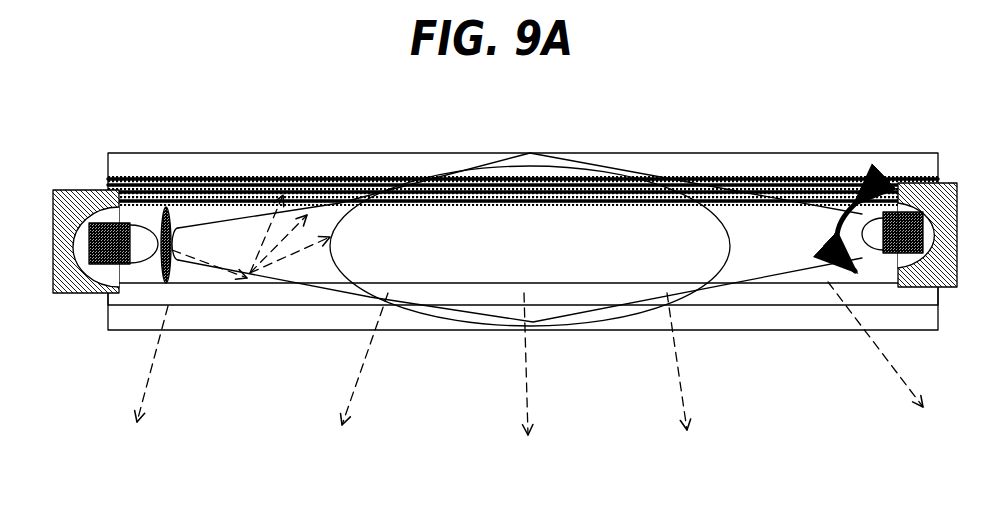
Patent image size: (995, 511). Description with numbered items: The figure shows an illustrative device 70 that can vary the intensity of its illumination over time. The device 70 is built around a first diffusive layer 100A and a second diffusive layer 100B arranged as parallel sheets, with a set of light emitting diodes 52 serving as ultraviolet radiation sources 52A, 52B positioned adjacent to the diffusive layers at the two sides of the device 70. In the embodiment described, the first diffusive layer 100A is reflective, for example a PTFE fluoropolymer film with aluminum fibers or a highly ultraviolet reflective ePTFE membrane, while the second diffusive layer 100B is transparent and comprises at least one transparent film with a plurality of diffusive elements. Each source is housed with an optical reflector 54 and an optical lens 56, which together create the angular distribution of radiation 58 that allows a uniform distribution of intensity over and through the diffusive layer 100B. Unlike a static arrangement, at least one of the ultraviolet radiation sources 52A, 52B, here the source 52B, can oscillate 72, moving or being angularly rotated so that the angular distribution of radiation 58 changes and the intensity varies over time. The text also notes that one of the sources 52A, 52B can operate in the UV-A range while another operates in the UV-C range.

The light emitting diode 52 is at (158, 247).
The first ultraviolet radiation source 52A is at (136, 253).
The second ultraviolet radiation source 52B is at (878, 222).
The optical reflector 54 is at (102, 198).
The optical lens 56 is at (172, 284).
The angular distribution of radiation 58 is at (772, 218).
The device 70 is at (250, 138).
The oscillation 72 is at (852, 275).
The first diffusive layer 100A is at (363, 177).
The second diffusive layer 100B is at (757, 305).